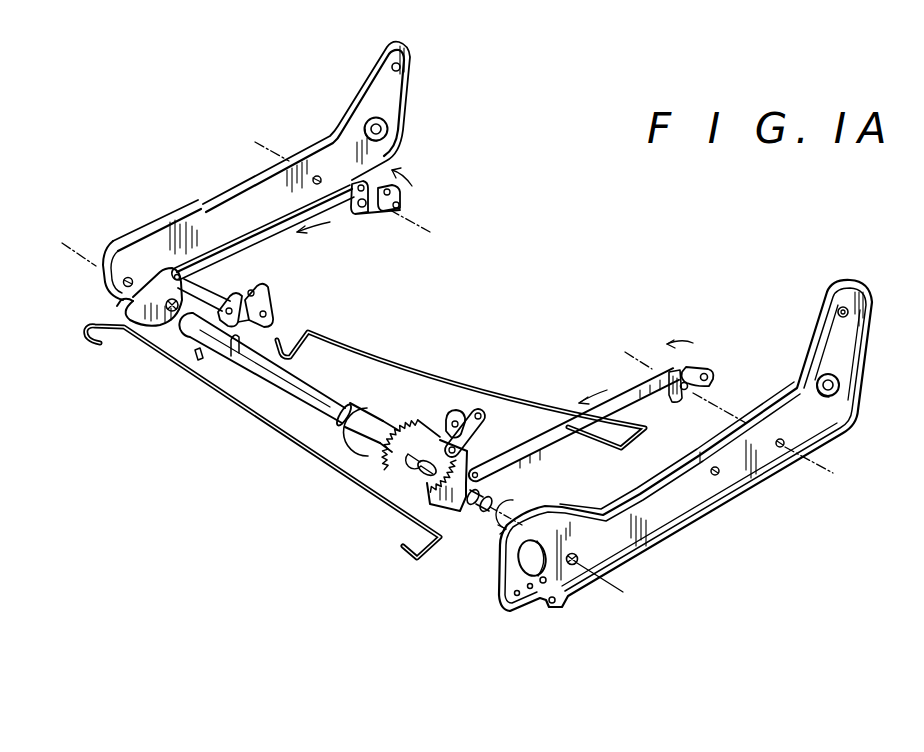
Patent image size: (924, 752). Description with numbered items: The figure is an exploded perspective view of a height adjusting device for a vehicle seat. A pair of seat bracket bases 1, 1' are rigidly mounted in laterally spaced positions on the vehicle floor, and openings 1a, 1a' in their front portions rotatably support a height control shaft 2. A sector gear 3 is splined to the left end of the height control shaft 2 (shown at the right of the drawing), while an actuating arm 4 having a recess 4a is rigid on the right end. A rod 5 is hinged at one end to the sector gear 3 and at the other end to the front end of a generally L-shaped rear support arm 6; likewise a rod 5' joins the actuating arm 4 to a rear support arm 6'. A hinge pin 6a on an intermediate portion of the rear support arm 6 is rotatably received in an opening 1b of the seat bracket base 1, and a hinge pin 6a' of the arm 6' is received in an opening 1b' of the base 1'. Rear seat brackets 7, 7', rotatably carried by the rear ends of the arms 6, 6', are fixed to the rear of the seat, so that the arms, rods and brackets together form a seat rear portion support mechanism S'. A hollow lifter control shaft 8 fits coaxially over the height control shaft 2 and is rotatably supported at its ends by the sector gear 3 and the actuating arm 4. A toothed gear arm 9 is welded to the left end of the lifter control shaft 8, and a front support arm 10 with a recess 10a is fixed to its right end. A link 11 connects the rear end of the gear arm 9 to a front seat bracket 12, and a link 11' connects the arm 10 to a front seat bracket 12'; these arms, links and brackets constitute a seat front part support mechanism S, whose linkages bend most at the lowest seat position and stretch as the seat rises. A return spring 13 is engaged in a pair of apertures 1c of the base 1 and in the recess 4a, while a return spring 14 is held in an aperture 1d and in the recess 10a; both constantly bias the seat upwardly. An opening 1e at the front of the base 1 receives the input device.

The seat bracket base 1 is at (699, 445).
The opening 1a is at (614, 574).
The opening 1b is at (824, 468).
The apertures 1c is at (540, 602).
The aperture 1d is at (717, 475).
The opening 1e is at (537, 547).
The seat bracket base 1' is at (256, 171).
The opening 1a' is at (97, 236).
The opening 1b' is at (302, 132).
The height control shaft 2 is at (293, 380).
The sector gear 3 is at (456, 512).
The actuating arm 4 is at (130, 318).
The recess 4a is at (117, 306).
The rod 5 is at (574, 424).
The rod 5' is at (263, 232).
The rear support arm 6 is at (708, 384).
The rear support arm 6' is at (396, 166).
The hinge pin 6a is at (702, 416).
The hinge pin 6a' is at (396, 238).
The rear seat bracket 7 is at (670, 350).
The rear seat bracket 7' is at (417, 210).
The lifter control shaft 8 is at (360, 410).
The gear arm 9 is at (432, 440).
The front support arm 10 is at (192, 316).
The recess 10a is at (201, 356).
The link 11 is at (485, 398).
The link 11' is at (232, 278).
The front seat bracket 12 is at (461, 388).
The front seat bracket 12' is at (279, 305).
The return spring 13 is at (165, 358).
The return spring 14 is at (371, 354).
The seat front part support mechanism S is at (365, 335).
The seat rear portion support mechanism S' is at (614, 241).